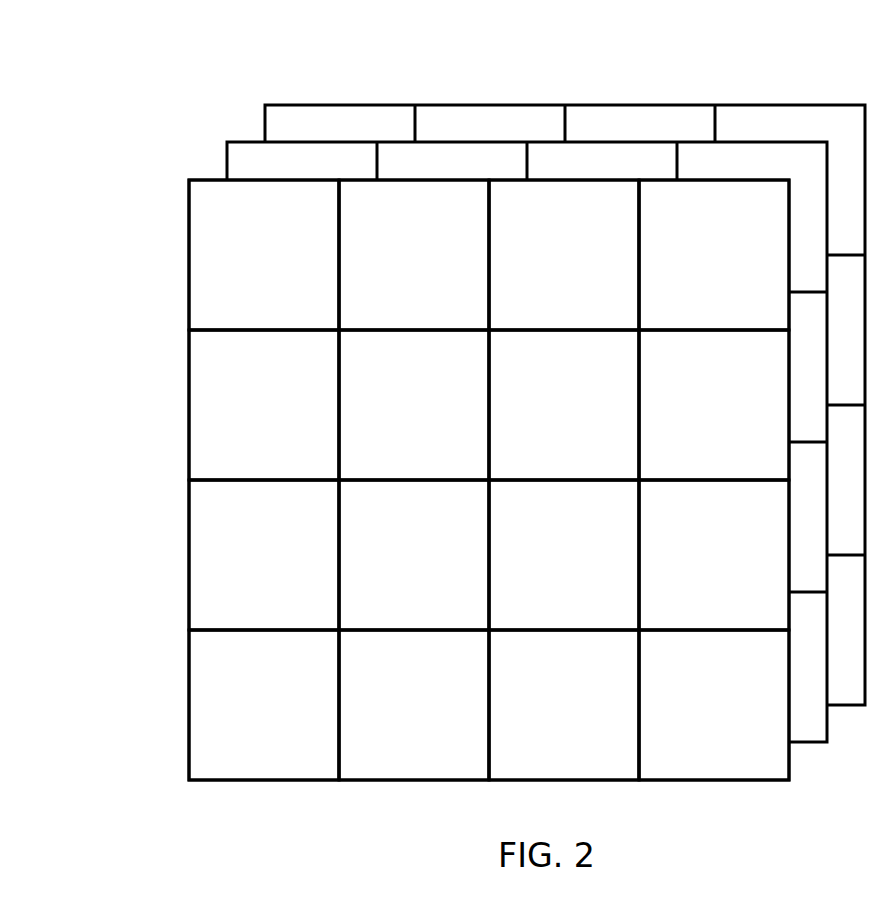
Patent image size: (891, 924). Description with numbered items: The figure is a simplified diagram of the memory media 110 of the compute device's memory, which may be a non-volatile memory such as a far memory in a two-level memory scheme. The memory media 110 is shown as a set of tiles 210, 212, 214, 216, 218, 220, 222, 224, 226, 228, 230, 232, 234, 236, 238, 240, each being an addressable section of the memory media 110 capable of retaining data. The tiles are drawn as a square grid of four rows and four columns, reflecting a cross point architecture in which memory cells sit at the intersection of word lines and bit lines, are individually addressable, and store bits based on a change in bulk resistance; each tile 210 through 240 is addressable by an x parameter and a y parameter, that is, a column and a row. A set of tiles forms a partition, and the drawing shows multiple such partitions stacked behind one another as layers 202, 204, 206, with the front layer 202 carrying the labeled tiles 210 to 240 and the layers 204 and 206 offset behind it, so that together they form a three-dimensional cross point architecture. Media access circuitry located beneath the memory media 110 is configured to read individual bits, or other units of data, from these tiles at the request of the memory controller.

The memory media 110 is at (50, 91).
The layer 202 is at (201, 180).
The layer 204 is at (243, 142).
The layer 206 is at (285, 105).
The tile 210 is at (243, 276).
The tile 212 is at (393, 276).
The tile 214 is at (543, 276).
The tile 216 is at (693, 276).
The tile 218 is at (243, 426).
The tile 220 is at (393, 426).
The tile 222 is at (543, 426).
The tile 224 is at (693, 426).
The tile 226 is at (243, 576).
The tile 228 is at (393, 576).
The tile 230 is at (543, 576).
The tile 232 is at (693, 576).
The tile 234 is at (243, 726).
The tile 236 is at (393, 726).
The tile 238 is at (543, 726).
The tile 240 is at (693, 726).